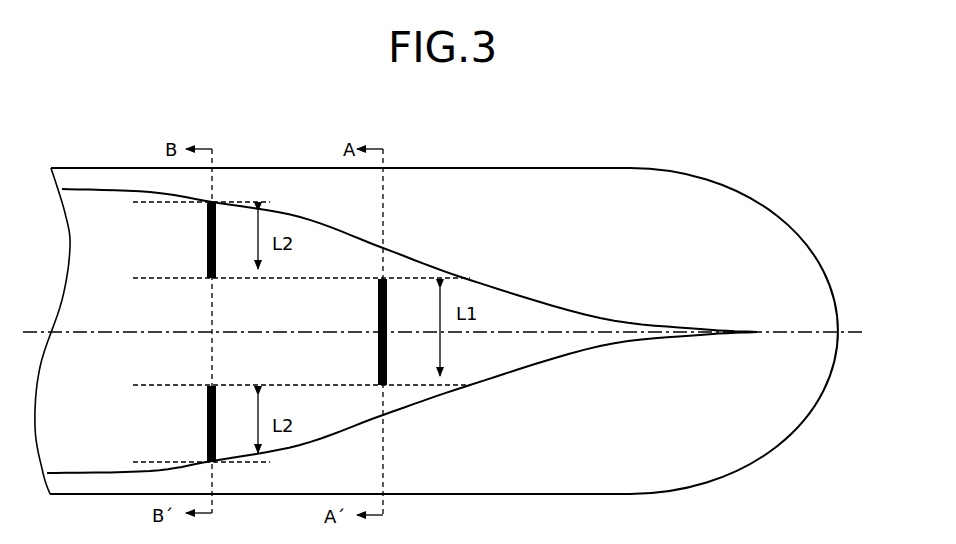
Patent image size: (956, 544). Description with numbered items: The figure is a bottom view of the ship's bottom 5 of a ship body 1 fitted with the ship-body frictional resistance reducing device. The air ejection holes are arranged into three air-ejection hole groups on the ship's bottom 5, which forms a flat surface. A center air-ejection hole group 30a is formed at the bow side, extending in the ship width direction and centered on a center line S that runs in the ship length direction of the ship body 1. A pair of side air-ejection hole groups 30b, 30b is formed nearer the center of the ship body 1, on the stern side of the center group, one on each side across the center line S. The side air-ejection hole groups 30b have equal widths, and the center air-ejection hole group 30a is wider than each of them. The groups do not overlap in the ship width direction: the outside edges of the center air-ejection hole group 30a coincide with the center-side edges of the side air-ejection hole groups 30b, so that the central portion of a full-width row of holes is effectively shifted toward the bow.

The ship body 1 is at (523, 166).
The ship's bottom 5 is at (527, 361).
The center line S is at (600, 332).
The center air-ejection hole group 30a is at (388, 363).
The side air-ejection hole group 30b is at (207, 238).